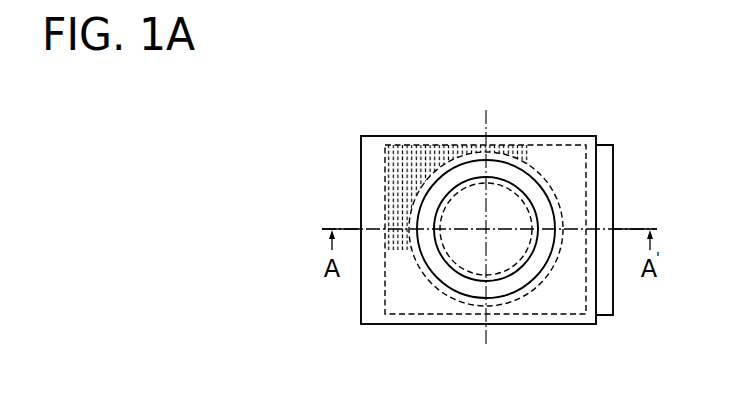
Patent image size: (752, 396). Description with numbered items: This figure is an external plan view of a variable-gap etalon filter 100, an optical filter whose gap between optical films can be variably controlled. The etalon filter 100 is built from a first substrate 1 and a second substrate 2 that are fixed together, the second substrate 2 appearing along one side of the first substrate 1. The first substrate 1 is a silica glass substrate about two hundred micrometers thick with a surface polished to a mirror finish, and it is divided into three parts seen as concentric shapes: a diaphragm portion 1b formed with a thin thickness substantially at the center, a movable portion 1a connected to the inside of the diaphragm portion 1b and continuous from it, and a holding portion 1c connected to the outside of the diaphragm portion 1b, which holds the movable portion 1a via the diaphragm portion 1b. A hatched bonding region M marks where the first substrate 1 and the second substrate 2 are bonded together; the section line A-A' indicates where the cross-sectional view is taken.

The variable-gap etalon filter 100 is at (598, 106).
The first substrate 1 is at (379, 147).
The movable portion 1a is at (510, 200).
The diaphragm portion 1b is at (513, 174).
The holding portion 1c is at (552, 300).
The bonding region M is at (420, 148).
The second substrate 2 is at (602, 185).